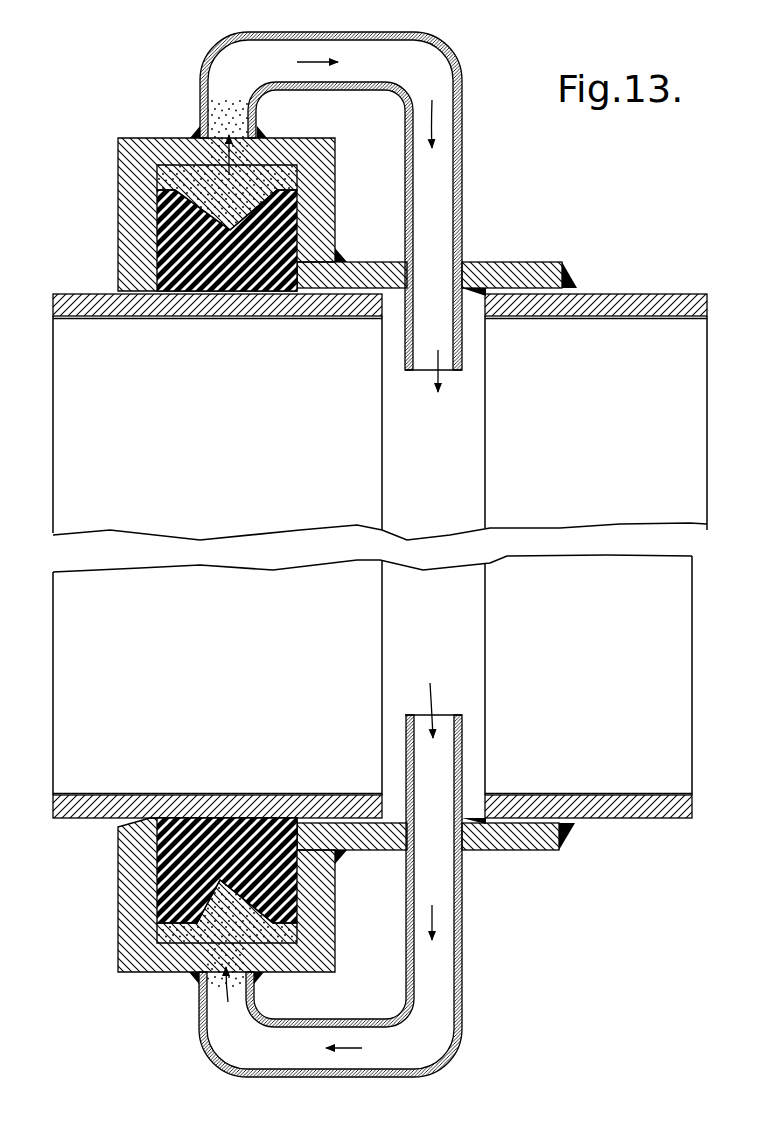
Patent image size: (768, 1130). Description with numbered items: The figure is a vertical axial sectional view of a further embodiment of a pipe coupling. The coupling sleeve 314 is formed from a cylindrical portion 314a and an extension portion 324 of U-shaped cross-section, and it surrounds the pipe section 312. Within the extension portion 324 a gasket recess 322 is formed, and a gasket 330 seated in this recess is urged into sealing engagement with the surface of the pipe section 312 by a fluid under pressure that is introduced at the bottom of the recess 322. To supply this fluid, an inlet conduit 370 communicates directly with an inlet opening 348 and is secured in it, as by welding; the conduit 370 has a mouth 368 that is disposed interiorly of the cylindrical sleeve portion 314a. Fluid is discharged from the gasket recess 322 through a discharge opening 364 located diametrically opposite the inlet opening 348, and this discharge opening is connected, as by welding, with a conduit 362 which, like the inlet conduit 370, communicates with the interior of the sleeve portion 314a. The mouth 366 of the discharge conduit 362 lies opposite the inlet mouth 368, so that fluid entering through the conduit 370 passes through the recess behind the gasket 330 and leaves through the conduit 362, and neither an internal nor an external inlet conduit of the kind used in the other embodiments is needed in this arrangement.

The pipe section 312 is at (78, 295).
The coupling sleeve 314 is at (374, 257).
The cylindrical portion 314a is at (513, 275).
The gasket recess 322 is at (177, 172).
The extension portion 324 is at (118, 190).
The gasket 330 is at (158, 245).
The inlet opening 348 is at (197, 962).
The conduit 362 is at (326, 32).
The discharge opening 364 is at (258, 160).
The mouth 366 is at (410, 372).
The mouth 368 is at (460, 714).
The inlet conduit 370 is at (463, 915).